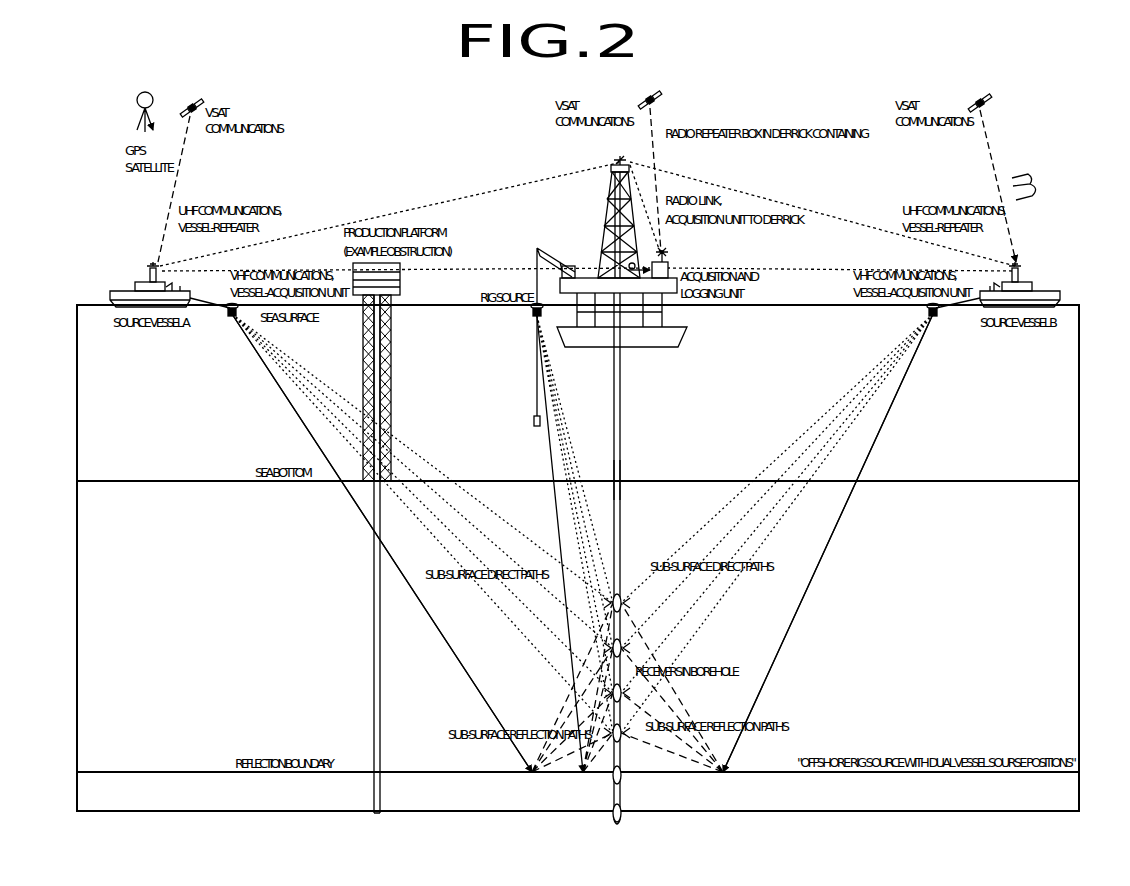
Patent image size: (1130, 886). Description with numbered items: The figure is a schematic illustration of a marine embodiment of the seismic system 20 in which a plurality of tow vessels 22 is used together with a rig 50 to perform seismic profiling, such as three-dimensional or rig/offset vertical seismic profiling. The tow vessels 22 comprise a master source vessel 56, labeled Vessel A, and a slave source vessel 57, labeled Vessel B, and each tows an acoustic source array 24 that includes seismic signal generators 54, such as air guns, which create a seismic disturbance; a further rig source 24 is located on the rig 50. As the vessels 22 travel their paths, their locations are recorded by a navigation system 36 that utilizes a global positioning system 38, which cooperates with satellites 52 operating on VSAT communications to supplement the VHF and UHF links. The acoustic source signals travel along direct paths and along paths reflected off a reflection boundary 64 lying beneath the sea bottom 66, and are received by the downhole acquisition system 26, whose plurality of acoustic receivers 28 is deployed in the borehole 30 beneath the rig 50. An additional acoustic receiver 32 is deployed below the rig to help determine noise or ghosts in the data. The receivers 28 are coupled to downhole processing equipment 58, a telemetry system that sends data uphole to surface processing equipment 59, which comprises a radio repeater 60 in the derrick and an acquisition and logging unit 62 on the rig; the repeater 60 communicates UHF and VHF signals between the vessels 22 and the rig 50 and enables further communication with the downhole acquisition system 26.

The seismic system 20 is at (1030, 176).
The tow vessel 22 is at (582, 260).
The source array 24 is at (230, 312).
The downhole acquisition system 26 is at (597, 456).
The acoustic receiver 28 is at (621, 600).
The borehole 30 is at (622, 380).
The additional acoustic receiver 32 is at (533, 421).
The navigation system 36 is at (163, 214).
The global positioning system 38 is at (134, 122).
The rig 50 is at (603, 224).
The satellite 52 is at (200, 103).
The seismic signal generator 54 is at (238, 318).
The master source vessel 56 is at (125, 260).
The slave source vessel 57 is at (1058, 298).
The downhole processing equipment 58 is at (622, 478).
The surface processing equipment 59 is at (672, 236).
The radio repeater 60 is at (615, 158).
The acquisition and logging unit 62 is at (680, 310).
The reflection boundary 64 is at (137, 772).
The sea bottom 66 is at (137, 480).